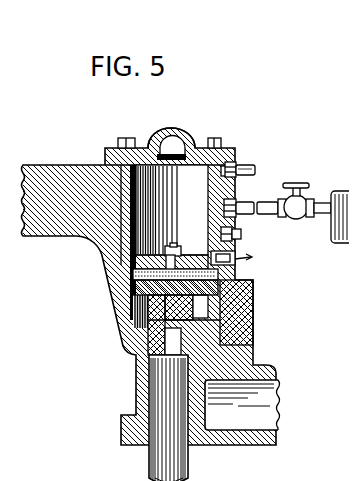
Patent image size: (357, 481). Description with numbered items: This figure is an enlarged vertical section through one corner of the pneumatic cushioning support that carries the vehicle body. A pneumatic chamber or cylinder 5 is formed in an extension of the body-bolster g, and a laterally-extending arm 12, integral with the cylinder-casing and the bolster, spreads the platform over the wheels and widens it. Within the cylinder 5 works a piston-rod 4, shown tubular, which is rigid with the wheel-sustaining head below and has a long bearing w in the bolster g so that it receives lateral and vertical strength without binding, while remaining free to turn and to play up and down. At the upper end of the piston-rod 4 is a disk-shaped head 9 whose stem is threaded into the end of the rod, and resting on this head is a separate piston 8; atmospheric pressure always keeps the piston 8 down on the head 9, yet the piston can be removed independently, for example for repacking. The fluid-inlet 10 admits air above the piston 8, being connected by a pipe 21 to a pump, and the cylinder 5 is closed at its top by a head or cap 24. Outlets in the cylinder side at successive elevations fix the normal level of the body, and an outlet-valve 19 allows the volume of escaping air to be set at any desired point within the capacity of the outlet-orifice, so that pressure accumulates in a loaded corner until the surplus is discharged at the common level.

The piston-rod 4 is at (186, 462).
The pneumatic chamber or cylinder 5 is at (212, 197).
The piston 8 is at (125, 252).
The disk-shaped head 9 is at (125, 279).
The fluid-inlet 10 is at (230, 150).
The arm 12 is at (64, 204).
The outlet-valve 19 is at (303, 215).
The pipe 21 is at (254, 160).
The head or cap 24 is at (172, 132).
The bearing W is at (128, 383).
The body-bolster g is at (253, 405).